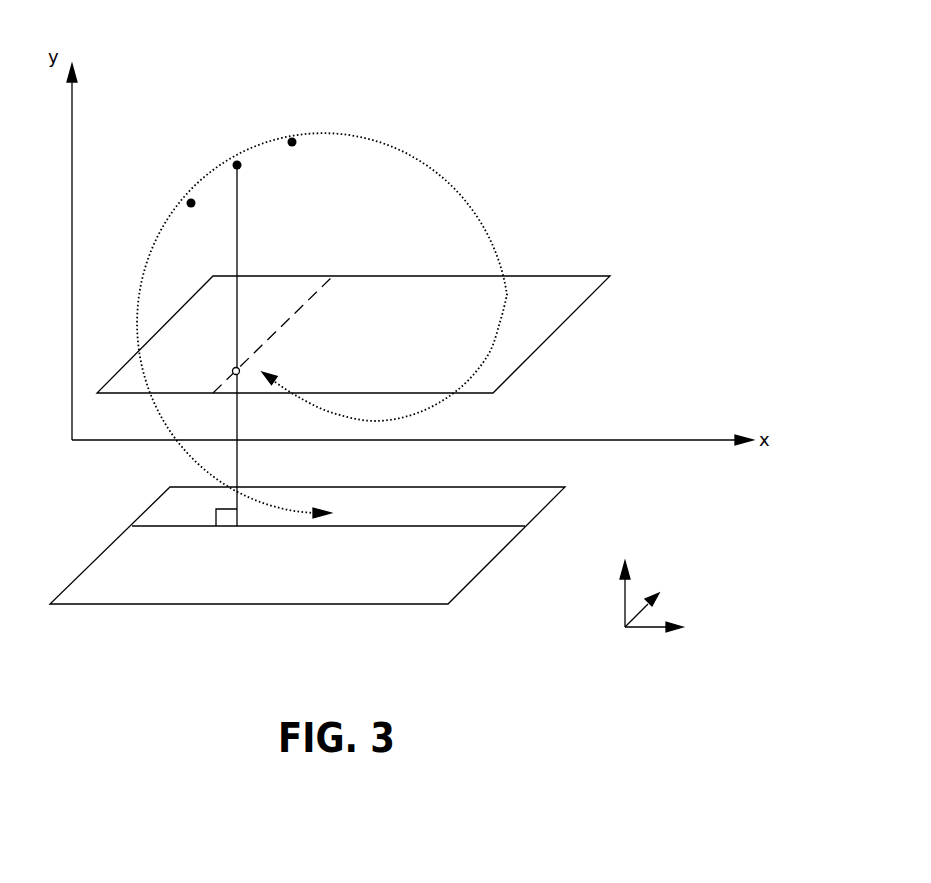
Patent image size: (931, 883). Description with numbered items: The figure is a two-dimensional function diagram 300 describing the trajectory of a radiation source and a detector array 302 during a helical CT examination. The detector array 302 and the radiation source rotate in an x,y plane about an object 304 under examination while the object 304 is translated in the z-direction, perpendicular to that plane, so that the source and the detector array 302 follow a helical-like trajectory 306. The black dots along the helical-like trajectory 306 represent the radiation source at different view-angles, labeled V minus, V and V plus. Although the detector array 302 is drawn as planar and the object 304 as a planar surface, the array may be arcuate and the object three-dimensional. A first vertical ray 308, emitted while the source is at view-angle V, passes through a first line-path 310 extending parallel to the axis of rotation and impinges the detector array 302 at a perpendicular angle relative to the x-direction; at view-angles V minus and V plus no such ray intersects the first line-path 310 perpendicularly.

The two-dimensional function diagram 300 is at (600, 56).
The detector array 302 is at (535, 487).
The object 304 is at (550, 276).
The helical-like trajectory 306 is at (468, 183).
The first vertical ray 308 is at (237, 215).
The first line-path 310 is at (273, 334).